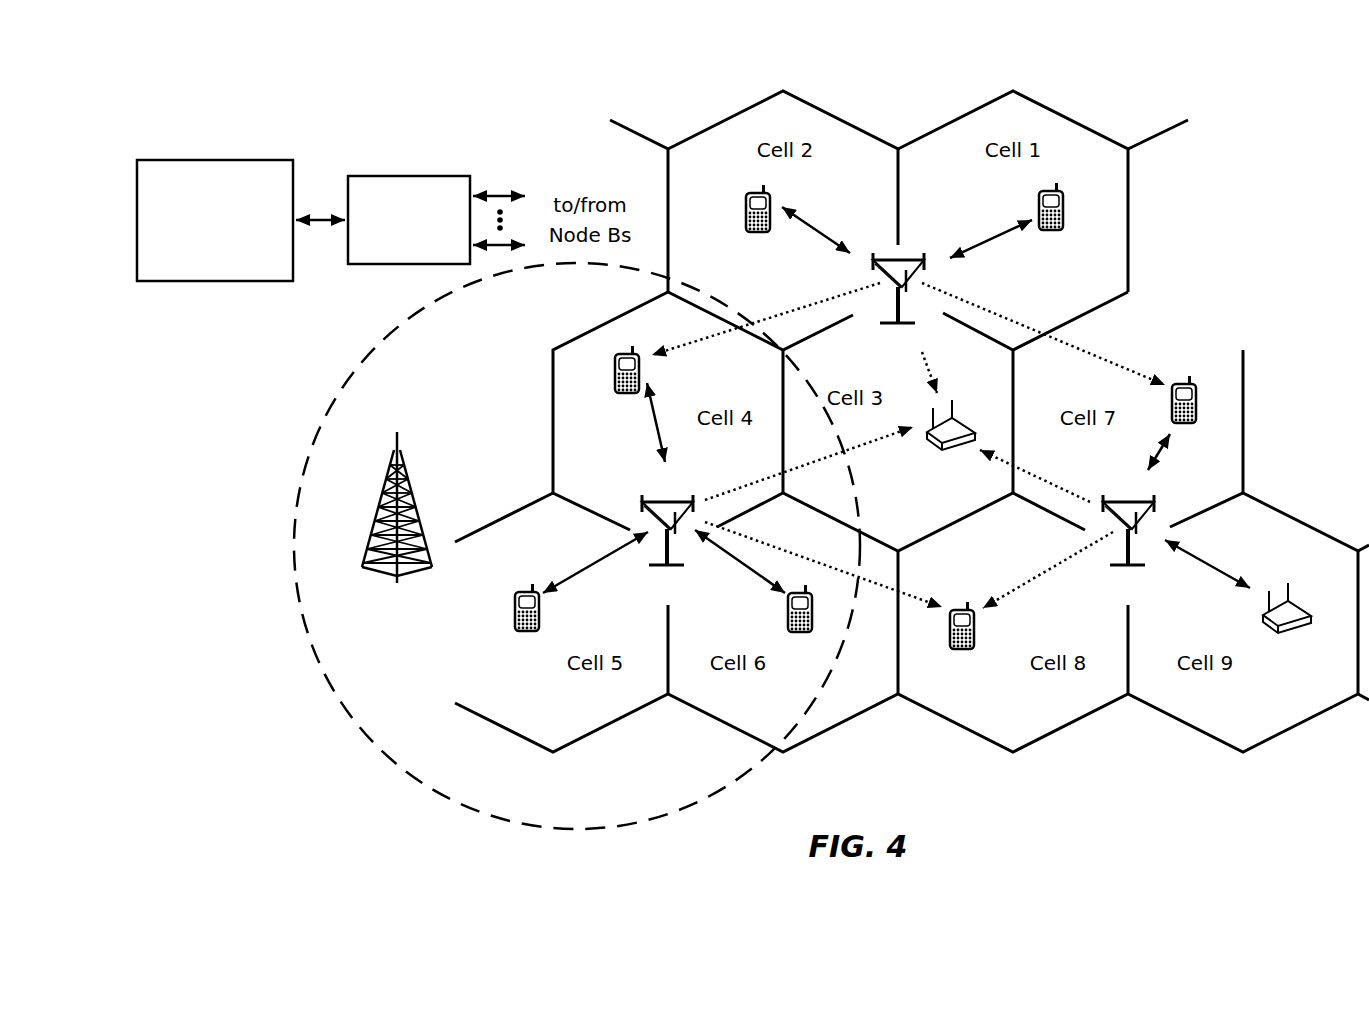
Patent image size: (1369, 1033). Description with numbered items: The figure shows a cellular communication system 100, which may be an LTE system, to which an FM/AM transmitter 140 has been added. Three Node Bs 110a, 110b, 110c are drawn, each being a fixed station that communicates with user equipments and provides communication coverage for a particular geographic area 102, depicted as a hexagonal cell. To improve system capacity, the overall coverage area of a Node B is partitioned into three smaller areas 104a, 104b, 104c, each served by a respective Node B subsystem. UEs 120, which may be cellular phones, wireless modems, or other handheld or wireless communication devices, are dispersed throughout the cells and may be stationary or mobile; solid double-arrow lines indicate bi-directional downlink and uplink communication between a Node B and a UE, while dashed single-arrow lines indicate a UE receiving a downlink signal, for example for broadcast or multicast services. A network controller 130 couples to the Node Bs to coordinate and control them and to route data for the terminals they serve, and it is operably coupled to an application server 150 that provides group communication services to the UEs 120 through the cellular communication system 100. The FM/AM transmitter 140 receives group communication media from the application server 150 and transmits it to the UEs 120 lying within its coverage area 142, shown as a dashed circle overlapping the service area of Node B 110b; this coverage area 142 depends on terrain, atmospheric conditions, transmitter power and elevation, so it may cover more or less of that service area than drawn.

The cellular communication system 100 is at (496, 70).
The geographic area 102 is at (1130, 175).
The smaller area 104a is at (899, 299).
The smaller area 104b is at (783, 493).
The smaller area 104c is at (997, 616).
The Node B 110a is at (908, 258).
The Node B 110b is at (666, 499).
The Node B 110c is at (1134, 500).
The user equipment 120 is at (760, 190).
The network controller 130 is at (403, 176).
The FM/AM transmitter 140 is at (406, 490).
The coverage area 142 is at (343, 710).
The application server 150 is at (225, 160).